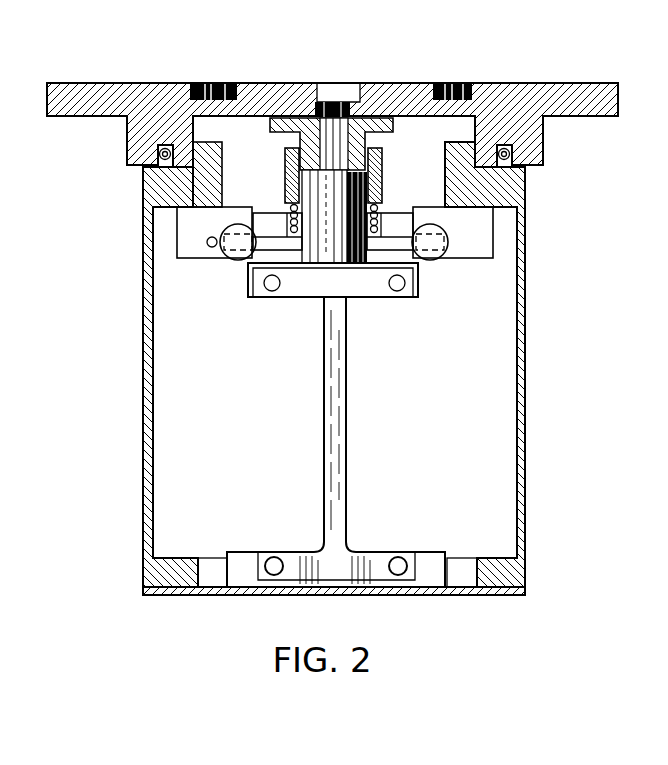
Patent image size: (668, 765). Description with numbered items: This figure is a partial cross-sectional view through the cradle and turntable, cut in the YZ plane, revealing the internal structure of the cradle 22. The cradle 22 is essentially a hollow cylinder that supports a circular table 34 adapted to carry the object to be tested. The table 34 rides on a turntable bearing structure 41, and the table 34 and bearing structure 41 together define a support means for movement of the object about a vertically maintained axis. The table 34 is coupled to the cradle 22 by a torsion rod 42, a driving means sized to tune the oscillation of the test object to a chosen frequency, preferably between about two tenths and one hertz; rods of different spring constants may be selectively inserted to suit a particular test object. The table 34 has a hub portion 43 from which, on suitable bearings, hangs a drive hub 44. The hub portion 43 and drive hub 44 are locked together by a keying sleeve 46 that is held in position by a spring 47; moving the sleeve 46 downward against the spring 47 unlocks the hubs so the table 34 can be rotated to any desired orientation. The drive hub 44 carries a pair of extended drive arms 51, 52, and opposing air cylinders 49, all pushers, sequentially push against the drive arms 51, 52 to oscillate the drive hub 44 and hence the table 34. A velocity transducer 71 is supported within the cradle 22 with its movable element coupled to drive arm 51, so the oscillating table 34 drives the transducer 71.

The table 34 is at (150, 90).
The turntable bearing structure 41 is at (490, 136).
The hub portion 43 is at (400, 120).
The cradle 22 is at (148, 362).
The keying sleeve 46 is at (285, 176).
The drive hub 44 is at (382, 180).
The torsion rod 42 is at (340, 381).
The drive arm 51 is at (285, 244).
The spring 47 is at (290, 207).
The drive arm 52 is at (393, 240).
The air cylinder 49 is at (235, 260).
The velocity transducer 71 is at (210, 248).